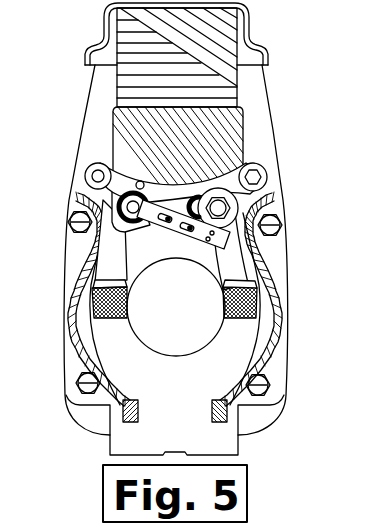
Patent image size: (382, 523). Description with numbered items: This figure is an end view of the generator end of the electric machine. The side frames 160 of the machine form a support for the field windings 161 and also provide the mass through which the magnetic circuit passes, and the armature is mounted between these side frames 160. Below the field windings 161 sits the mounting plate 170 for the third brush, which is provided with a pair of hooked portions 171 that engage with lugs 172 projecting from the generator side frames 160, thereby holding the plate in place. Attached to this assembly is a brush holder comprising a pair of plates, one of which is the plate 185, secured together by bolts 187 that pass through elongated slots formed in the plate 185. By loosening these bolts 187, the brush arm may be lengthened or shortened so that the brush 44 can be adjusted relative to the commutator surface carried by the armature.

The side frames 160 is at (254, 130).
The field windings 161 is at (133, 67).
The mounting plate 170 is at (178, 187).
The hooked portions 171 is at (264, 170).
The lugs 172 is at (262, 180).
The plate 185 is at (165, 222).
The bolts 187 is at (188, 233).
The brush 44 is at (214, 238).